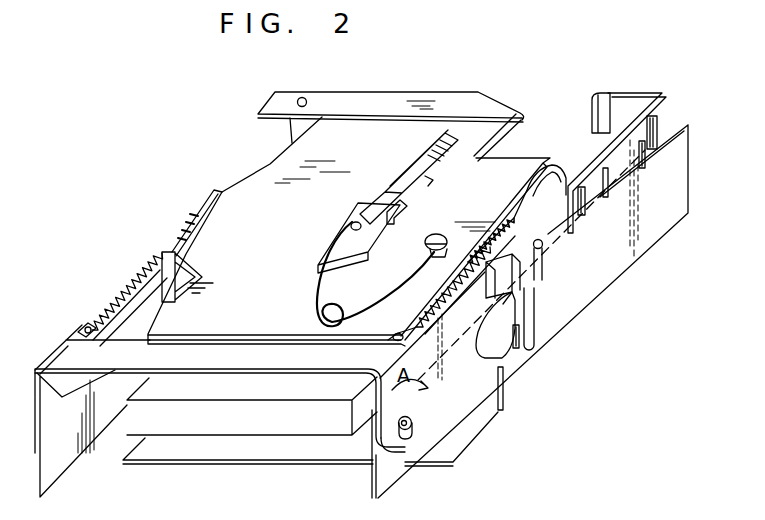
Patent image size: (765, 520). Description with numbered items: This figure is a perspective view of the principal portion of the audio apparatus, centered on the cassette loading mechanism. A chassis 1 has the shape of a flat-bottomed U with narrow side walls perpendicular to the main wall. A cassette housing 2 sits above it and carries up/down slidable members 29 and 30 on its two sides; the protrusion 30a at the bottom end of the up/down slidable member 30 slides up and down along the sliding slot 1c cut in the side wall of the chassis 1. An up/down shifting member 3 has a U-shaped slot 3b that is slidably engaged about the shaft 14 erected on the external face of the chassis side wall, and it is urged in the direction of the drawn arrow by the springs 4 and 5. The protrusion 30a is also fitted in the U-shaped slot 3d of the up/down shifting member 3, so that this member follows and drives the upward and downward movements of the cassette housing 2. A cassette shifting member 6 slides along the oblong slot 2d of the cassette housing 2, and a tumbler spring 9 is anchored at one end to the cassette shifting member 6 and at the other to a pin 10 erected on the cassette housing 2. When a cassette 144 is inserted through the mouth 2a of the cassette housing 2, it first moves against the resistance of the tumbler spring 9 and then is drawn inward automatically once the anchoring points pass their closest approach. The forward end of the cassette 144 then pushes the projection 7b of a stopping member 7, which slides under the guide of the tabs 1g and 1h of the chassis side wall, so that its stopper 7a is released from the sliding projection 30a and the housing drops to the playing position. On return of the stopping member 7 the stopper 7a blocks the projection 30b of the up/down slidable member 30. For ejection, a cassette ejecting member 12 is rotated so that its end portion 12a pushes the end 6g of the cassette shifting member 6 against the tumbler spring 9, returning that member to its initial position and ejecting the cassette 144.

The chassis 1 is at (158, 452).
The sliding slot 1c is at (521, 338).
The tab 1g is at (572, 190).
The tab 1h is at (642, 160).
The cassette housing 2 is at (273, 161).
The mouth 2a is at (256, 338).
The oblong slot 2d is at (425, 162).
The up/down shifting member 3 is at (209, 352).
The U-shaped slot 3b is at (400, 443).
The U-shaped slot 3d is at (512, 286).
The spring 4 is at (118, 298).
The spring 5 is at (445, 296).
The cassette shifting member 6 is at (358, 216).
The end 6g is at (400, 206).
The stopping member 7 is at (664, 102).
The stopper 7a is at (495, 325).
The projection 7b is at (590, 108).
The tumbler spring 9 is at (320, 262).
The pin 10 is at (436, 233).
The cassette ejecting member 12 is at (395, 98).
The end portion 12a is at (495, 112).
The shaft 14 is at (411, 422).
The up/down slidable member 29 is at (203, 221).
The up/down slidable member 30 is at (514, 209).
The protrusion 30a is at (542, 252).
The projection 30b is at (536, 303).
The cassette 144 is at (262, 428).